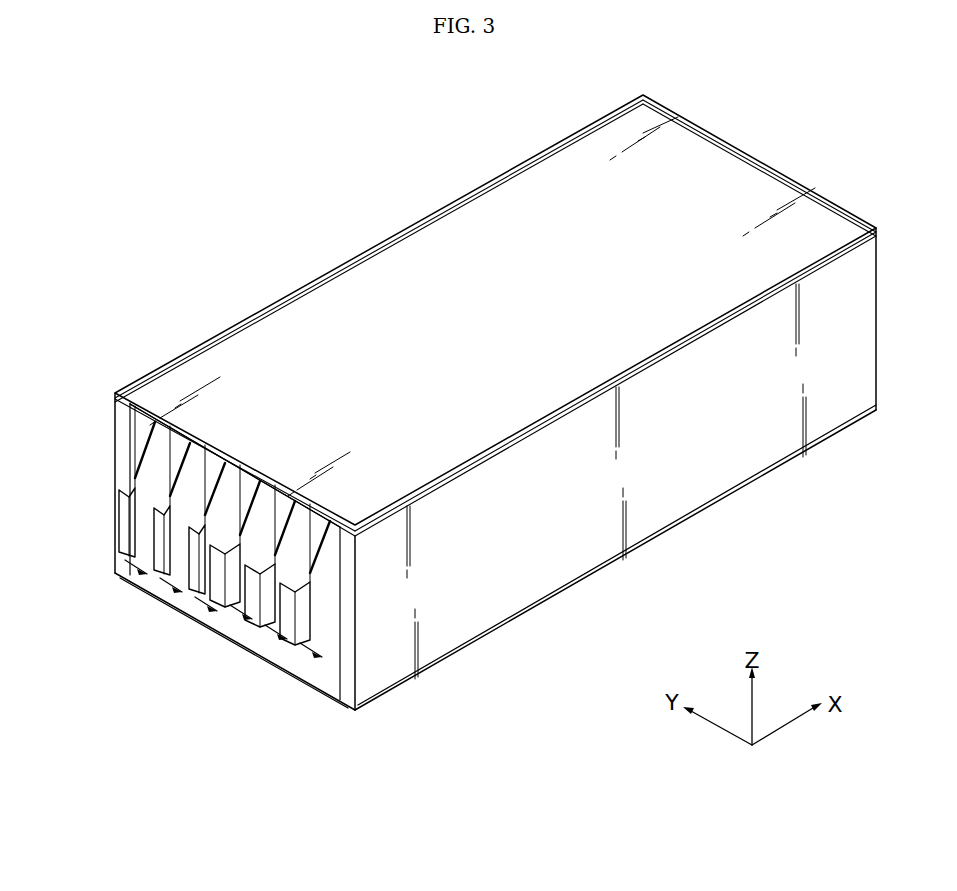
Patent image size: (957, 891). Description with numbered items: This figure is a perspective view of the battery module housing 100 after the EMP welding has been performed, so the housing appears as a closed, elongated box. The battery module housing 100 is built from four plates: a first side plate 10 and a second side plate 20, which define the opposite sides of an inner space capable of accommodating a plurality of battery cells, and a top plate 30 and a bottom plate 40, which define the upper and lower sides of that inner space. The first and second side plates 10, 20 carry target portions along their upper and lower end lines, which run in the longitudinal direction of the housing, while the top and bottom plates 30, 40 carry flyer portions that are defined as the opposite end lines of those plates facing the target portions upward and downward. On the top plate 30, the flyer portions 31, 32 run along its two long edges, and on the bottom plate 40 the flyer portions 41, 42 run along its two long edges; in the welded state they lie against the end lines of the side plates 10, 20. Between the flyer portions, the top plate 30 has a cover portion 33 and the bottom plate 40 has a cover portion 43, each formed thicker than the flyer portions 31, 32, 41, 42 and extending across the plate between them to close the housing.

The battery module housing 100 is at (460, 422).
The first side plate 10 is at (615, 469).
The second side plate 20 is at (187, 532).
The top plate 30 is at (495, 315).
The flyer portion 31 is at (845, 246).
The flyer portion 32 is at (457, 198).
The cover portion 33 is at (720, 170).
The bottom plate 40 is at (224, 578).
The flyer portion 41 is at (355, 710).
The flyer portion 42 is at (124, 579).
The cover portion 43 is at (245, 634).